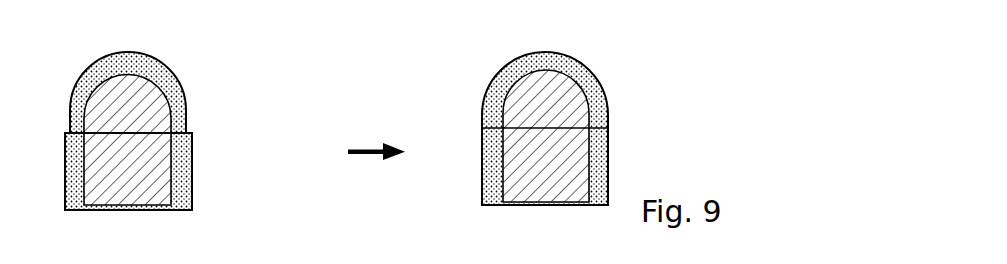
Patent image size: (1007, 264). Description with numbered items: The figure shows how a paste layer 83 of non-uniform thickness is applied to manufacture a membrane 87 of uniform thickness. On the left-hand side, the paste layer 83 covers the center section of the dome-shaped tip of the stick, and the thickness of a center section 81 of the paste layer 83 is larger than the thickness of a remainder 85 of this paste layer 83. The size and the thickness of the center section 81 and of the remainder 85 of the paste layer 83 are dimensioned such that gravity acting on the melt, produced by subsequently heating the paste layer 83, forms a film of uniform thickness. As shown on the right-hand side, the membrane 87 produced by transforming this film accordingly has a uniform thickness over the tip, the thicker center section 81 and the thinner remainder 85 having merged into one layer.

The center section of the paste layer 81 is at (122, 67).
The paste layer 83 is at (179, 75).
The remainder of the paste layer 85 is at (155, 100).
The membrane 87 is at (570, 100).